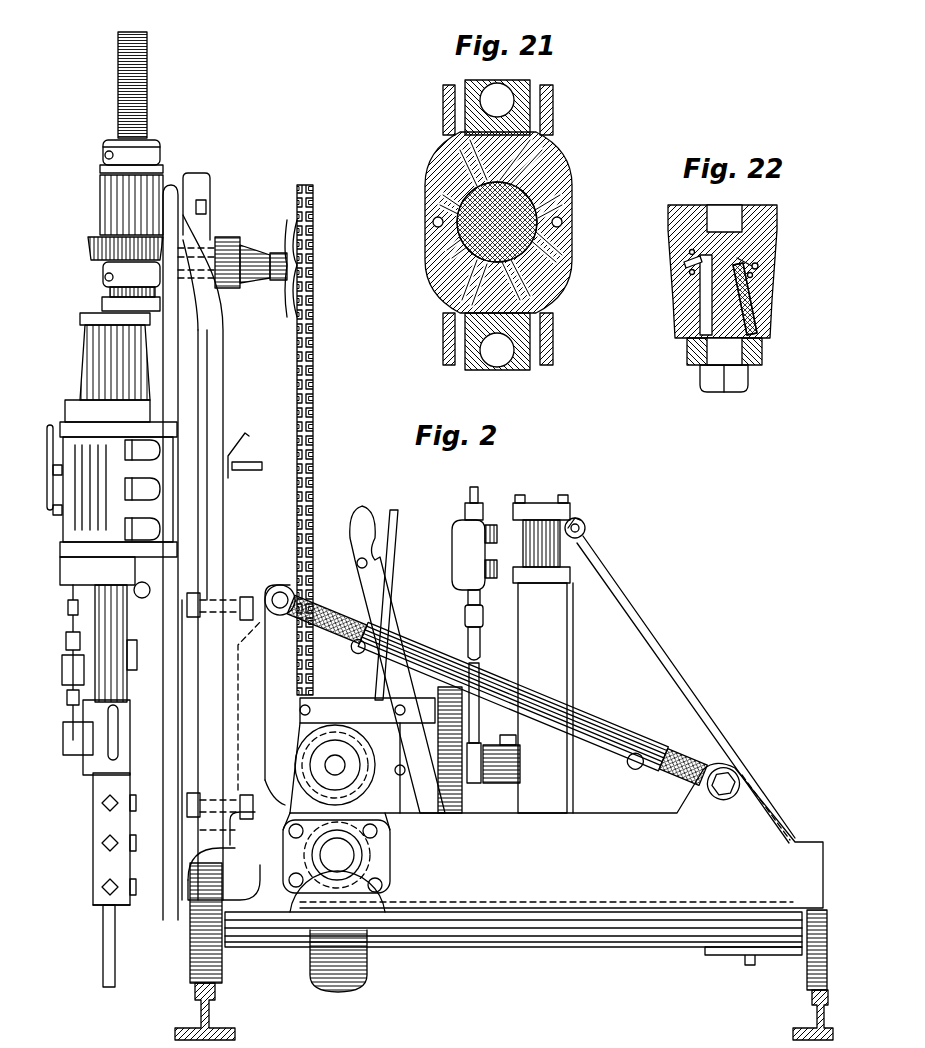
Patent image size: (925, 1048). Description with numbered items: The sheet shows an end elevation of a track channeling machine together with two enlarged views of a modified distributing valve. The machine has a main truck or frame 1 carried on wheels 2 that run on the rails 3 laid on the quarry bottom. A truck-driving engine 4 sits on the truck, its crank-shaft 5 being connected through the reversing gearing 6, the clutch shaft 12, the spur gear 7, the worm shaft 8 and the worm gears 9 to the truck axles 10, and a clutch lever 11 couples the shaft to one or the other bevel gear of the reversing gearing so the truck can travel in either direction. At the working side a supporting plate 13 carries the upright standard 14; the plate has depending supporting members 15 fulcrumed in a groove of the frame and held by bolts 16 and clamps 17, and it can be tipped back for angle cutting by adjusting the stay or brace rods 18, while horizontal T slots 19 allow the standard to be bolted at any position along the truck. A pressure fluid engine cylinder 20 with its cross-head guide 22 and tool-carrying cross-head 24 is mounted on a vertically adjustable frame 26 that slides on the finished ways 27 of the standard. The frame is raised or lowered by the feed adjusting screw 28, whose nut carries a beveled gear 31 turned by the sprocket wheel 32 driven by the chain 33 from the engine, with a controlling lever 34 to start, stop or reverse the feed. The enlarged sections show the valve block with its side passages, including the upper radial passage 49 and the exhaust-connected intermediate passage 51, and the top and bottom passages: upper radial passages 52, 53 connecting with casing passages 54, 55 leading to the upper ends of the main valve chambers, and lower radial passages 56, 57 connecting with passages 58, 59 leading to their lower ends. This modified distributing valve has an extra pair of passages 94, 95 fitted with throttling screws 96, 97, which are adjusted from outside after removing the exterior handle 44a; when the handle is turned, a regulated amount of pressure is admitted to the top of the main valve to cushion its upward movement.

In FIG. 2, the main truck or frame 1 is at (556, 835).
In FIG. 2, the wheels 2 is at (222, 976).
In FIG. 2, the rails 3 is at (210, 1010).
In FIG. 2, the truck-driving motor or engine 4 is at (540, 520).
In FIG. 2, the engine crank-shaft 5 is at (455, 760).
In FIG. 2, the reversing gearing 6 is at (366, 710).
In FIG. 2, the spur gear 7 is at (388, 842).
In FIG. 2, the worm shaft 8 is at (342, 856).
In FIG. 2, the worm gears 9 is at (365, 955).
In FIG. 2, the truck axles 10 is at (565, 935).
In FIG. 2, the clutch lever 11 is at (399, 538).
In FIG. 2, the clutch shaft 12 is at (335, 755).
In FIG. 2, the supporting plate 13 is at (250, 657).
In FIG. 2, the upright standard 14 is at (220, 368).
In FIG. 2, the depending supporting member 15 is at (215, 848).
In FIG. 2, the bolts 16 is at (190, 877).
In FIG. 2, the clamps 17 is at (228, 826).
In FIG. 2, the stay or brace rods 18 is at (593, 712).
In FIG. 2, the horizontal T slots 19 is at (246, 594).
In FIG. 2, the cylinder 20 is at (90, 402).
In FIG. 2, the cross-head guide 22 is at (128, 892).
In FIG. 21, the cross-head guide 22 is at (433, 222).
In FIG. 2, the tool-carrying cross-head 24 is at (103, 830).
In FIG. 2, the vertically adjustable frame 26 is at (180, 745).
In FIG. 2, the longitudinal finished ways 27 is at (180, 345).
In FIG. 2, the feed adjusting screw 28 is at (148, 105).
In FIG. 2, the beveled gear 31 is at (92, 240).
In FIG. 2, the sprocket wheel 32 is at (300, 258).
In FIG. 2, the chain 33 is at (312, 390).
In FIG. 2, the controlling lever 34 is at (362, 520).
In FIG. 2, the exterior handle 44a is at (55, 425).
In FIG. 22, the exterior handle 44a is at (755, 366).
In FIG. 21, the upper radial passage 49 is at (430, 203).
In FIG. 21, the intermediate passage 51 is at (548, 236).
In FIG. 21, the upper radial passage 52 is at (530, 148).
In FIG. 21, the upper radial passage 53 is at (455, 150).
In FIG. 21, the passage 54 is at (542, 100).
In FIG. 21, the passage 55 is at (455, 105).
In FIG. 21, the lower radial passage 56 is at (528, 293).
In FIG. 21, the lower radial passage 57 is at (450, 322).
In FIG. 21, the passage 58 is at (540, 350).
In FIG. 21, the passage 59 is at (455, 350).
In FIG. 21, the passage 94 is at (567, 190).
In FIG. 22, the passage 94 is at (757, 265).
In FIG. 21, the passage 95 is at (447, 278).
In FIG. 22, the passage 95 is at (690, 262).
In FIG. 21, the throttling screw 96 is at (555, 178).
In FIG. 22, the throttling screw 96 is at (760, 303).
In FIG. 21, the throttling screw 97 is at (445, 256).
In FIG. 22, the throttling screw 97 is at (700, 303).